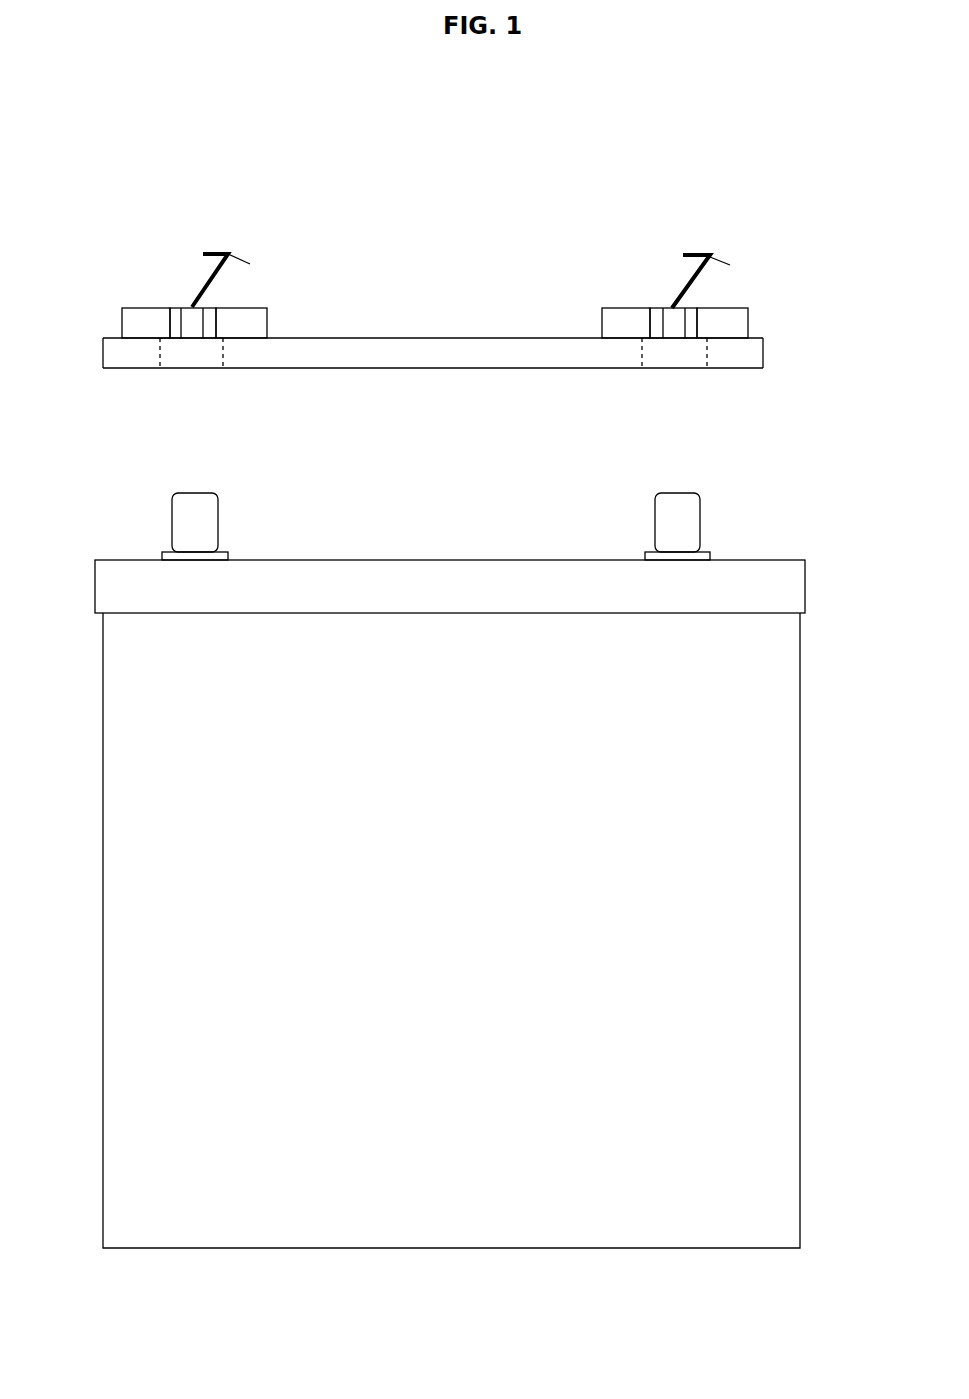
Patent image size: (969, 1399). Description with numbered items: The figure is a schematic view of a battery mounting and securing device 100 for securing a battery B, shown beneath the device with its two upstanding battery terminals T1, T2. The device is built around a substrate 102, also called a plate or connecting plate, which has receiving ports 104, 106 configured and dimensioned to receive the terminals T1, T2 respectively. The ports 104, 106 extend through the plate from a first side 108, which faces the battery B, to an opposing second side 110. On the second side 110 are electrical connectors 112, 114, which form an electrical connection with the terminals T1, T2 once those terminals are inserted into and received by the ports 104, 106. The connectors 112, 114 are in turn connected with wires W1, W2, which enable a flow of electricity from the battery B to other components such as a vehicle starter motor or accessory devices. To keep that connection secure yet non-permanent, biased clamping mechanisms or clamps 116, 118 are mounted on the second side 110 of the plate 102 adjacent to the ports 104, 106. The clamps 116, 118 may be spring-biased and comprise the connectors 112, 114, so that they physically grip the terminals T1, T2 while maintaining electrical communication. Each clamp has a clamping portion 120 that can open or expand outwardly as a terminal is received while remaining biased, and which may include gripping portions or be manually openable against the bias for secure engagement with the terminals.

The battery mounting and securing device 100 is at (787, 90).
The substrate 102 is at (118, 356).
The receiving port 104 is at (215, 360).
The receiving port 106 is at (692, 362).
The first side 108 is at (430, 368).
The second side 110 is at (428, 338).
The electrical connector 112 is at (182, 302).
The electrical connector 114 is at (655, 305).
The clamp 116 is at (142, 318).
The clamp 118 is at (608, 325).
The clamping portion 120 is at (217, 327).
The wire W1 is at (205, 293).
The wire W2 is at (680, 295).
The battery terminal T1 is at (209, 538).
The battery terminal T2 is at (692, 538).
The battery B is at (470, 797).